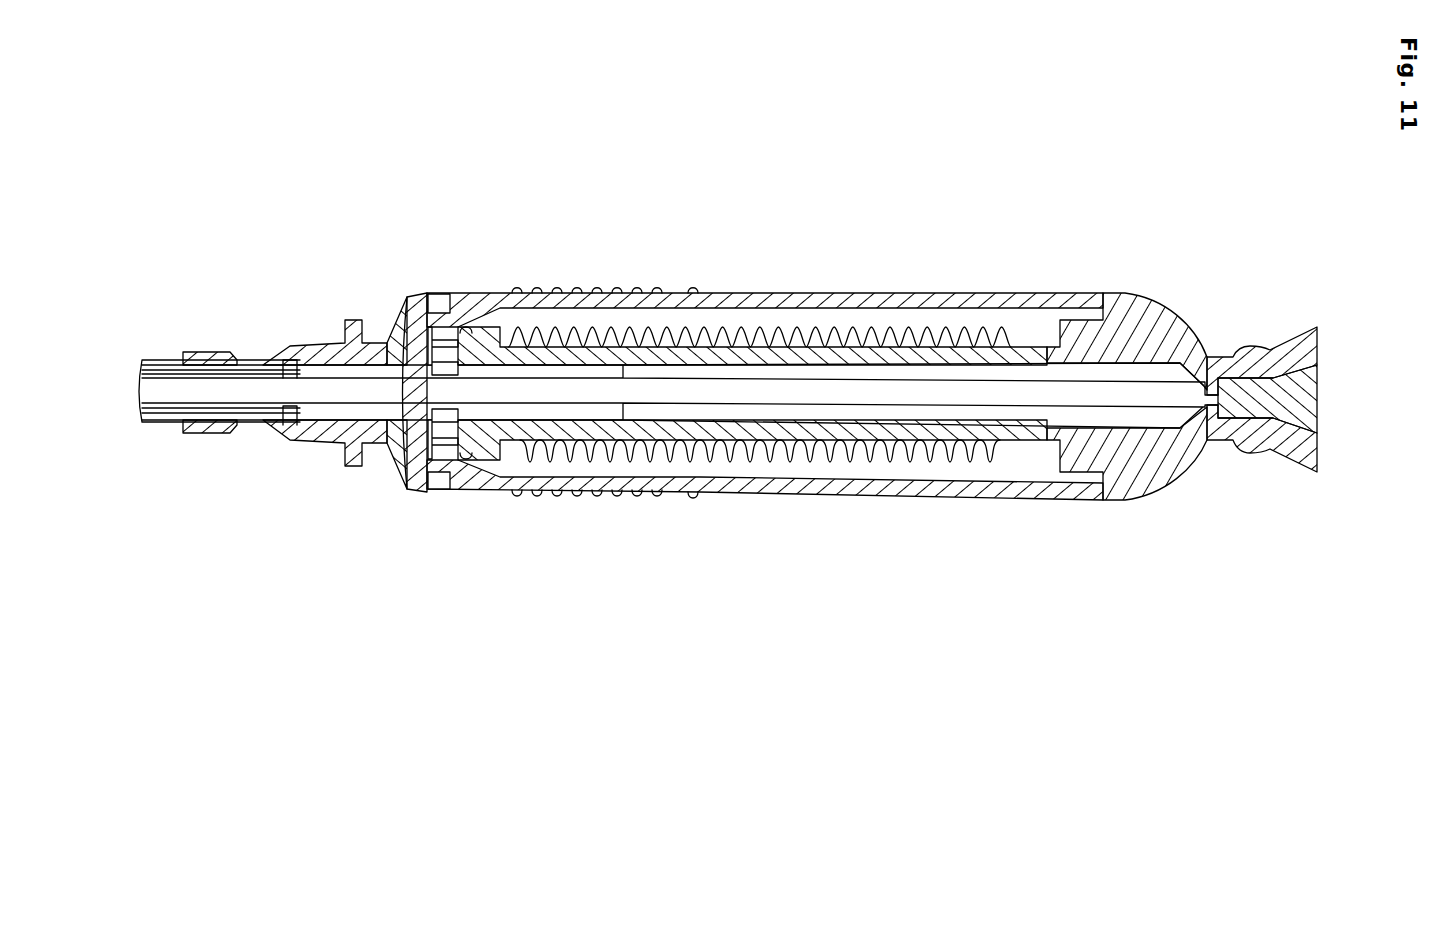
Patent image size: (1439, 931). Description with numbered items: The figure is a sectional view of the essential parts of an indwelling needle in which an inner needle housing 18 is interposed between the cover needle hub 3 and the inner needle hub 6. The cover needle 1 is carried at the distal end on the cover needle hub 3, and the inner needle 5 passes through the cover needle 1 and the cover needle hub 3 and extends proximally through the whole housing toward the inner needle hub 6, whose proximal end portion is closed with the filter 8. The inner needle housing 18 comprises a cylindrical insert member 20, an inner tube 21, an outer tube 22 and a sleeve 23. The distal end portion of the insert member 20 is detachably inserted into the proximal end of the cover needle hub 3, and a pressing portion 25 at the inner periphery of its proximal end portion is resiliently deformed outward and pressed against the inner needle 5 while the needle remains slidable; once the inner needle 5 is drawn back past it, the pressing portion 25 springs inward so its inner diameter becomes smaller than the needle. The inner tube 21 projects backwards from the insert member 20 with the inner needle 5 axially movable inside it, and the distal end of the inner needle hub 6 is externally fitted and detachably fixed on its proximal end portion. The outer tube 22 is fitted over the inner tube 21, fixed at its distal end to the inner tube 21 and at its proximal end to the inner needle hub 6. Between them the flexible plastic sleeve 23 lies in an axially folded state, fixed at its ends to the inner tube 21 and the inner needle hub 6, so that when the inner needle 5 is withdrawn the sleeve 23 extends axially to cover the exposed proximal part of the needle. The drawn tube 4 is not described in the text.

The cover needle 1 is at (173, 365).
The cover needle hub 3 is at (306, 340).
The outer tube 4 is at (153, 359).
The inner needle 5 is at (165, 422).
The inner needle hub 6 is at (1146, 290).
The filter 8 is at (1253, 416).
The inner needle housing 18 is at (829, 268).
The insert member 20 is at (416, 296).
The inner tube 21 is at (615, 333).
The outer tube 22 is at (721, 292).
The sleeve 23 is at (921, 330).
The pressing portion 25 is at (397, 448).